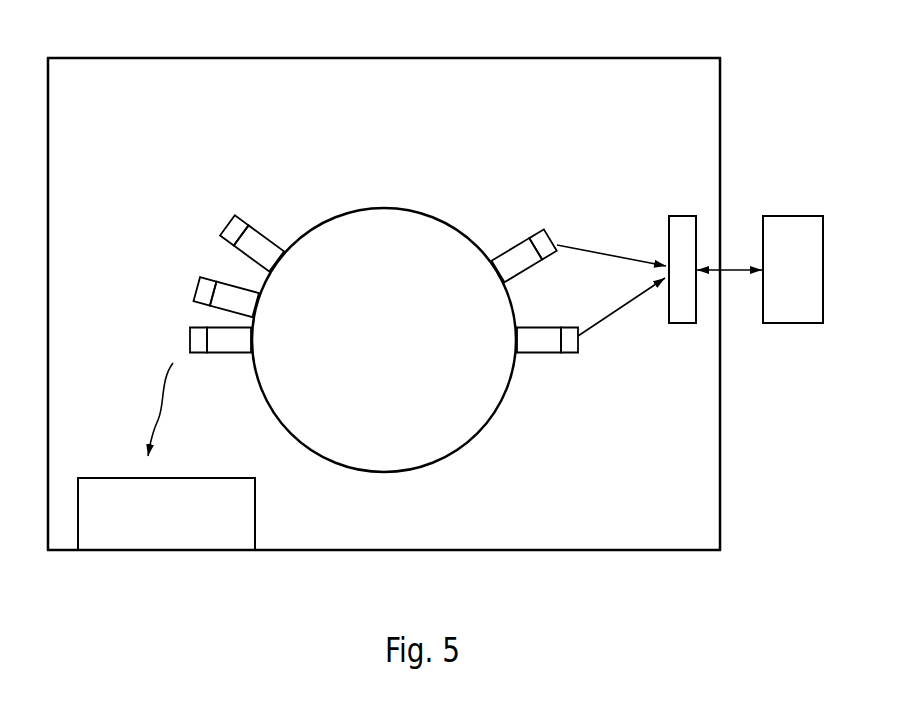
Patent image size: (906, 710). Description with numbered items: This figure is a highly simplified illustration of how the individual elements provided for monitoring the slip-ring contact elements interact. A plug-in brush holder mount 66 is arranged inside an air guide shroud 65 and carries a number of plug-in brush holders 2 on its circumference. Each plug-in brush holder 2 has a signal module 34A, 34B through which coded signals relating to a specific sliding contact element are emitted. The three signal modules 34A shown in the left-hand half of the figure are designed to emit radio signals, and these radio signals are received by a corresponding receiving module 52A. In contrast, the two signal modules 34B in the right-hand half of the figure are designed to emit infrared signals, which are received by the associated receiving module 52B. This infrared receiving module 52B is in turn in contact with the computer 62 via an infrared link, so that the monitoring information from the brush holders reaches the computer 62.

The air guide shroud 65 is at (407, 58).
The plug-in brush holder mount 66 is at (465, 445).
The plug-in brush holder 2 is at (257, 247).
The signal module 34A is at (233, 230).
The signal module 34B is at (542, 242).
The receiving module 52A is at (256, 512).
The receiving module 52B is at (680, 216).
The computer 62 is at (790, 216).